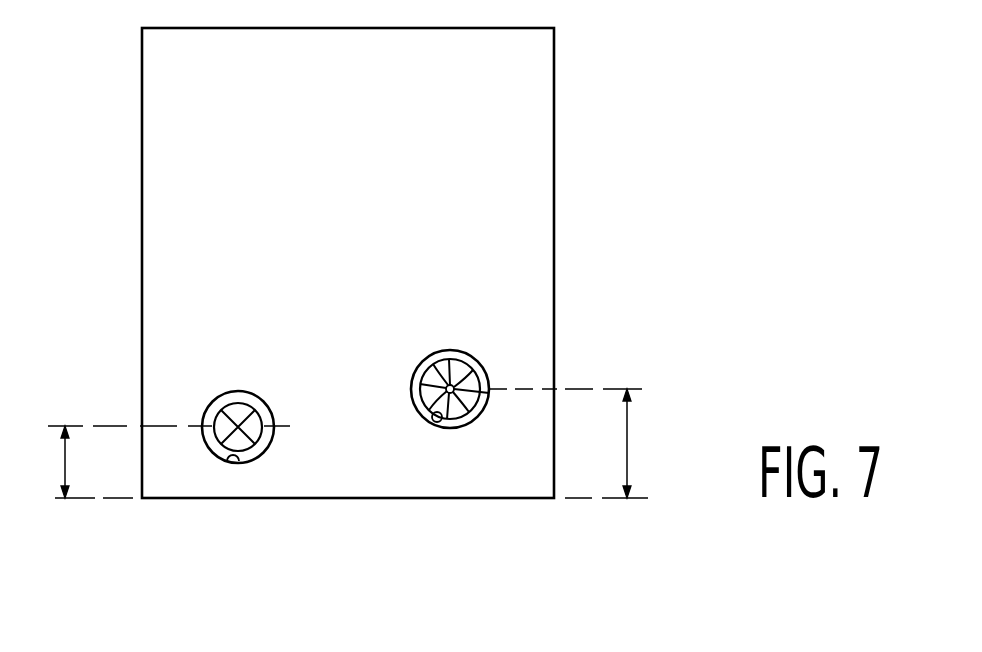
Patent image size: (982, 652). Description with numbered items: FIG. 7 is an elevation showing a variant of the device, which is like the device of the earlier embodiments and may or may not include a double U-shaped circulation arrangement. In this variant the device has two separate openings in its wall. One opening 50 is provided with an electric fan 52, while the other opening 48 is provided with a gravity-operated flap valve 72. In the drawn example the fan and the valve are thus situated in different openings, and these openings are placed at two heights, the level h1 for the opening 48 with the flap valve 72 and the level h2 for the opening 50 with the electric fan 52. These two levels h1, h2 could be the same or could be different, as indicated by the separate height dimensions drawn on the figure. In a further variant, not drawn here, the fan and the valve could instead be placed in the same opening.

The opening 48 is at (229, 463).
The opening 50 is at (432, 420).
The gravity-operated flap valve 72 is at (239, 381).
The electric fan 52 is at (451, 338).
The level h1 is at (47, 462).
The level h2 is at (645, 443).